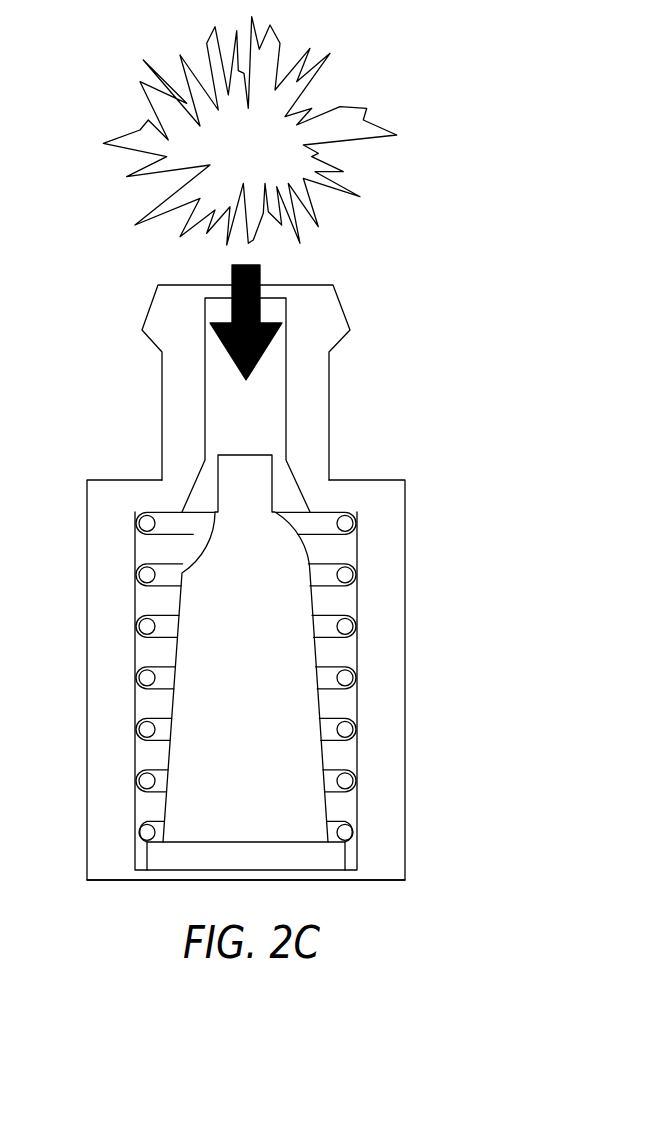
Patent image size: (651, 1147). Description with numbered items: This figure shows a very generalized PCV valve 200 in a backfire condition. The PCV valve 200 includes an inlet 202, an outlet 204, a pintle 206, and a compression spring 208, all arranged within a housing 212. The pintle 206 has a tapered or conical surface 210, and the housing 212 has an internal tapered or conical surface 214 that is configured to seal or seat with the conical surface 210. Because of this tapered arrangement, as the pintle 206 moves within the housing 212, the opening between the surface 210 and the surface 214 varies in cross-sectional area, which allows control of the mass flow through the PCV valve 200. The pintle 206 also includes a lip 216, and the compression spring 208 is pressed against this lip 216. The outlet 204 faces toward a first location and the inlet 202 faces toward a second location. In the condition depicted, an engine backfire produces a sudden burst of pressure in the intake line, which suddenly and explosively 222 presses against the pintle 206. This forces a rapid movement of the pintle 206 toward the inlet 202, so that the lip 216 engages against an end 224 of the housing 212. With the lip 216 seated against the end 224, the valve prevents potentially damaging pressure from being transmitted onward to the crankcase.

The PCV valve 200 is at (330, 402).
The inlet 202 is at (346, 912).
The outlet 204 is at (347, 233).
The pintle 206 is at (283, 655).
The compression spring 208 is at (345, 523).
The tapered or conical surface 210 is at (193, 547).
The housing 212 is at (378, 692).
The internal tapered or conical surface 214 is at (297, 490).
The lip 216 is at (345, 831).
The explosive pressure burst 222 is at (312, 108).
The end of housing 224 is at (117, 881).